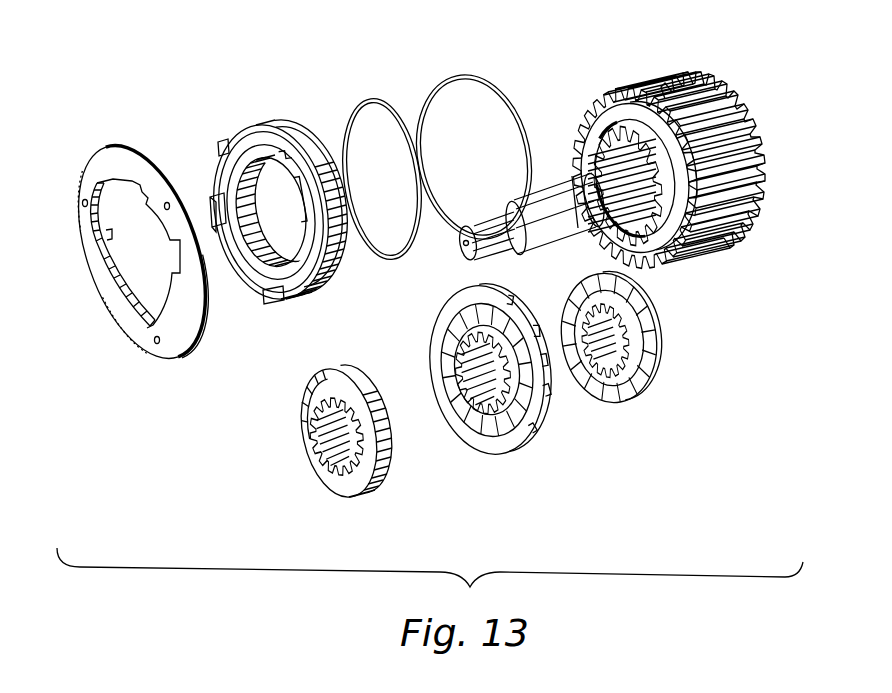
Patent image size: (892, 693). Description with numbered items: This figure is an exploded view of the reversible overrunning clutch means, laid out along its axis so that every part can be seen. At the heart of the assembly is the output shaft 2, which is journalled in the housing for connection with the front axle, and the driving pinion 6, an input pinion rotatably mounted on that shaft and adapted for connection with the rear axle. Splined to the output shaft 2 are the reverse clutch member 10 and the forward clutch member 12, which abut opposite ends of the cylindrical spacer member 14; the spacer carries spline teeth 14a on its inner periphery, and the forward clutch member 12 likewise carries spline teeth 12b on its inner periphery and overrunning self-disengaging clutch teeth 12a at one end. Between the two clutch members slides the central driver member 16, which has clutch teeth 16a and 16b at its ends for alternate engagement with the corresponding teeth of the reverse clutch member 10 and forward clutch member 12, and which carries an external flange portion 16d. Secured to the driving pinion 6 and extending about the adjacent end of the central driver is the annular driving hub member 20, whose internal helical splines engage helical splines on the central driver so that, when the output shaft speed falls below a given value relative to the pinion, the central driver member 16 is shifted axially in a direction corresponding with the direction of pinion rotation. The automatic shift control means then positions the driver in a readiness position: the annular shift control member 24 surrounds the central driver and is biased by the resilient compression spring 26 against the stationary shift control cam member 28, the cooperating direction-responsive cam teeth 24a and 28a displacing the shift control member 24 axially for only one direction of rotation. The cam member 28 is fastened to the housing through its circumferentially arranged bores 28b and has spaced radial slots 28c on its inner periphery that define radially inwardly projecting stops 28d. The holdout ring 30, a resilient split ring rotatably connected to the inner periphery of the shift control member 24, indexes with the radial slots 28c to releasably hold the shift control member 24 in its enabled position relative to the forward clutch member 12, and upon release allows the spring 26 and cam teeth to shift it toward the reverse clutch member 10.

The output shaft 2 is at (540, 249).
The driving pinion 6 is at (652, 87).
The reverse clutch member 10 is at (368, 496).
The forward clutch member 12 is at (637, 394).
The clutch teeth 12a is at (598, 243).
The spline teeth 12b is at (647, 344).
The spacer member 14 is at (466, 334).
The spline teeth 14a is at (458, 384).
The central driver member 16 is at (510, 455).
The clutch teeth 16a is at (462, 421).
The clutch teeth 16b is at (547, 388).
The external flange portion 16d is at (541, 446).
The annular driving hub member 20 is at (673, 248).
The shift control member 24 is at (337, 268).
The cam teeth 24a is at (248, 280).
The resilient compression spring 26 is at (386, 97).
The shift control cam member 28 is at (178, 348).
The cam teeth 28a is at (113, 235).
The bores 28b is at (168, 203).
The radial slots 28c is at (95, 212).
The stops 28d is at (125, 176).
The holdout ring 30 is at (282, 302).